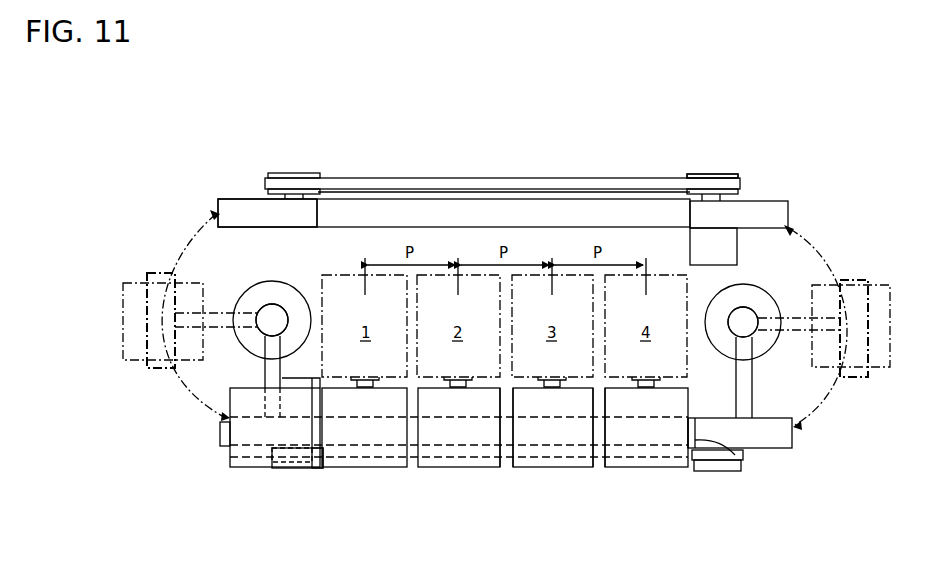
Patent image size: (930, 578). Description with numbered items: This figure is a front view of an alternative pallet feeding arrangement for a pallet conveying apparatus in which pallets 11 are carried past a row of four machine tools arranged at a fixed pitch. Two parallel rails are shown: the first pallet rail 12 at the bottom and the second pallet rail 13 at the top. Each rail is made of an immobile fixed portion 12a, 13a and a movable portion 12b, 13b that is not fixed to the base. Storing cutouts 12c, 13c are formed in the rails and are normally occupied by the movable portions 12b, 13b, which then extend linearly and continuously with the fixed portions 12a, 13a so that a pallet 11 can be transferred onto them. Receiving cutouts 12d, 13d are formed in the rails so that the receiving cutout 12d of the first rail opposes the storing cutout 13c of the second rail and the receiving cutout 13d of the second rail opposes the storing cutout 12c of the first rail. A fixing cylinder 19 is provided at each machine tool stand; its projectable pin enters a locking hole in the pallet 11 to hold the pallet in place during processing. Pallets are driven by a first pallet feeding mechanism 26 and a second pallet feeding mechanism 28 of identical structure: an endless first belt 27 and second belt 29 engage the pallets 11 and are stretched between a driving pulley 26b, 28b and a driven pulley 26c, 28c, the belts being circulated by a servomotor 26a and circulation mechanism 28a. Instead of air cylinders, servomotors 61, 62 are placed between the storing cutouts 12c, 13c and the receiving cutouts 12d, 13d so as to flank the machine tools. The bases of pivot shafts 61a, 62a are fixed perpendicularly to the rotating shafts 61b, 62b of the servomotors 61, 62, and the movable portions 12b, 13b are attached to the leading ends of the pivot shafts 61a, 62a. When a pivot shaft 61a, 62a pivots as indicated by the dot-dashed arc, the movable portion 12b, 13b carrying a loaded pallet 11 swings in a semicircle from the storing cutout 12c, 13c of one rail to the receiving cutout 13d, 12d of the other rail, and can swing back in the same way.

The pallet 11 is at (270, 470).
The first pallet rail 12 is at (795, 442).
The fixed portion of first pallet rail 12a is at (505, 445).
The first movable portion 12b is at (727, 418).
The storing cutout of first pallet rail 12c is at (700, 435).
The receiving cutout of first pallet rail 12d is at (313, 428).
The second pallet rail 13 is at (555, 197).
The fixed portion of second pallet rail 13a is at (483, 190).
The second movable portion 13b is at (228, 450).
The storing cutout of second pallet rail 13c is at (256, 210).
The receiving cutout of second pallet rail 13d is at (760, 212).
The fixing cylinder 19 is at (375, 379).
The first pallet feeding mechanism 26 is at (297, 484).
The servomotor 26a is at (305, 378).
The driving pulley 26b is at (315, 468).
The driven pulley 26c is at (697, 472).
The first belt 27 is at (600, 466).
The second pallet feeding mechanism 28 is at (744, 170).
The circulation mechanism 28a is at (690, 246).
The driving pulley 28b is at (718, 172).
The driven pulley 28c is at (292, 172).
The second belt 29 is at (381, 175).
The servomotor 61 is at (268, 282).
The pivot shaft 61a is at (262, 372).
The rotating shaft 61b is at (257, 310).
The servomotor 62 is at (755, 290).
The pivot shaft 62a is at (752, 402).
The rotating shaft 62b is at (750, 316).